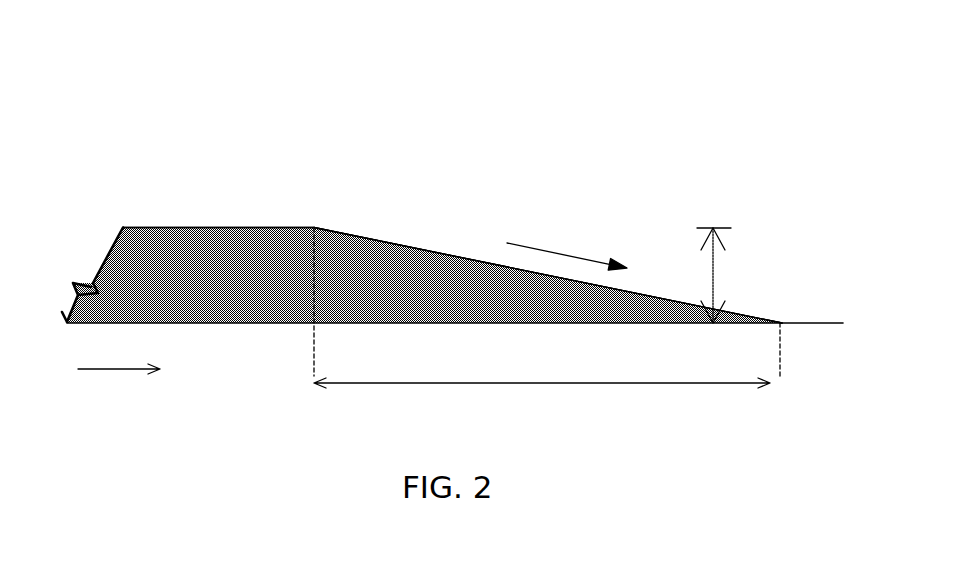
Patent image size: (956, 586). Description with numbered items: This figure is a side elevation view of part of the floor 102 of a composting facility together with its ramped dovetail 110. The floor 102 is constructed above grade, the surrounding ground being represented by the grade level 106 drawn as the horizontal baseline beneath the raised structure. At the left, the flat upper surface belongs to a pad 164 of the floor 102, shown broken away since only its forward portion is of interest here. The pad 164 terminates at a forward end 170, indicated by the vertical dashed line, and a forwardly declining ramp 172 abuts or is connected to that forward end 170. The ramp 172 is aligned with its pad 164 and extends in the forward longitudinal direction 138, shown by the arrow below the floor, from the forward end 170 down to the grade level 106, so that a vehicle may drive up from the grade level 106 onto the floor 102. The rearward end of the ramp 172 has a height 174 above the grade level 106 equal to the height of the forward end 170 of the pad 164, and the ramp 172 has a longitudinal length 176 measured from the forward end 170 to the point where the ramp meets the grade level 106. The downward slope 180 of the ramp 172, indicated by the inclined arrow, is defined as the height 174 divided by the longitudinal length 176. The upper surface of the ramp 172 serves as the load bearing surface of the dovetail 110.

The floor 102 is at (414, 89).
The grade level 106 is at (802, 322).
The ramped dovetail 110 is at (610, 157).
The longitudinal direction 138 is at (138, 368).
The pad 164 is at (193, 228).
The forward end 170 is at (307, 228).
The forwardly declining ramp 172 is at (422, 249).
The height 174 is at (717, 272).
The longitudinal length 176 is at (577, 383).
The downward slope 180 is at (553, 252).